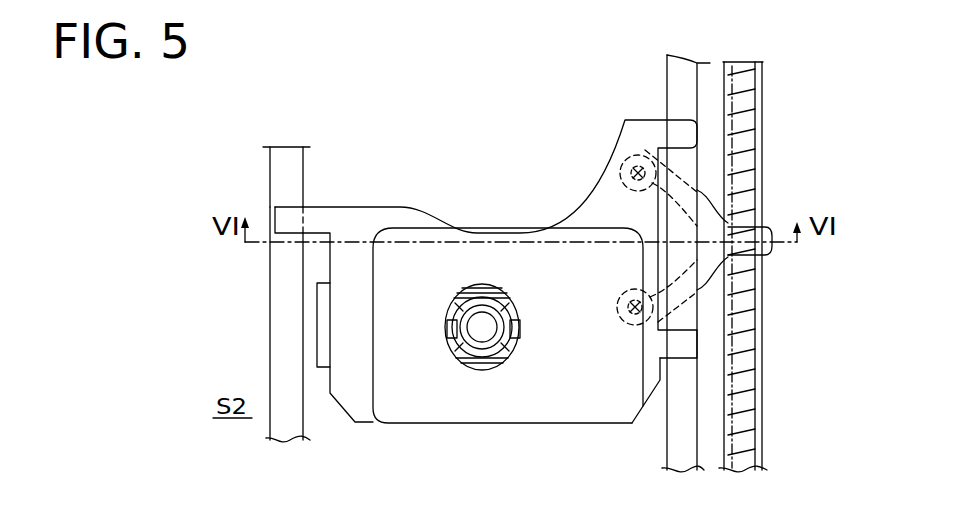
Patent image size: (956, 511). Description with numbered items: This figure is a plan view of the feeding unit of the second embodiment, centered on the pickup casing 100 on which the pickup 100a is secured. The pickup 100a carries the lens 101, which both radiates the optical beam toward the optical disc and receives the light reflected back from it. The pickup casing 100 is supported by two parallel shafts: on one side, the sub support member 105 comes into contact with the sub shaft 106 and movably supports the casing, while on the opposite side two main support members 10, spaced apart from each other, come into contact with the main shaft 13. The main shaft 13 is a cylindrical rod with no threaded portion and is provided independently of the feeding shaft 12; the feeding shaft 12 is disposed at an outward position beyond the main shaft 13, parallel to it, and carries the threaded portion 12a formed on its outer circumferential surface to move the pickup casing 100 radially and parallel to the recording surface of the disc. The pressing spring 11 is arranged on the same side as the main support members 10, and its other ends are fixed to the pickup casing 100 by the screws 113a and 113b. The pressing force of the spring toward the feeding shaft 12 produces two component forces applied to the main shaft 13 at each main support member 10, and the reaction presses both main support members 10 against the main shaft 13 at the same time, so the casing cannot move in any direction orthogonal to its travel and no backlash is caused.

The main support member 10 is at (680, 128).
The pressing spring 11 is at (765, 226).
The feeding shaft 12 is at (746, 158).
The threaded portion 12a is at (757, 93).
The main shaft 13 is at (680, 423).
The pickup casing 100 is at (486, 288).
The pickup 100a is at (405, 407).
The lens 101 is at (481, 318).
The sub support member 105 is at (287, 207).
The sub shaft 106 is at (283, 160).
The screw 113a is at (620, 160).
The screw 113b is at (625, 320).